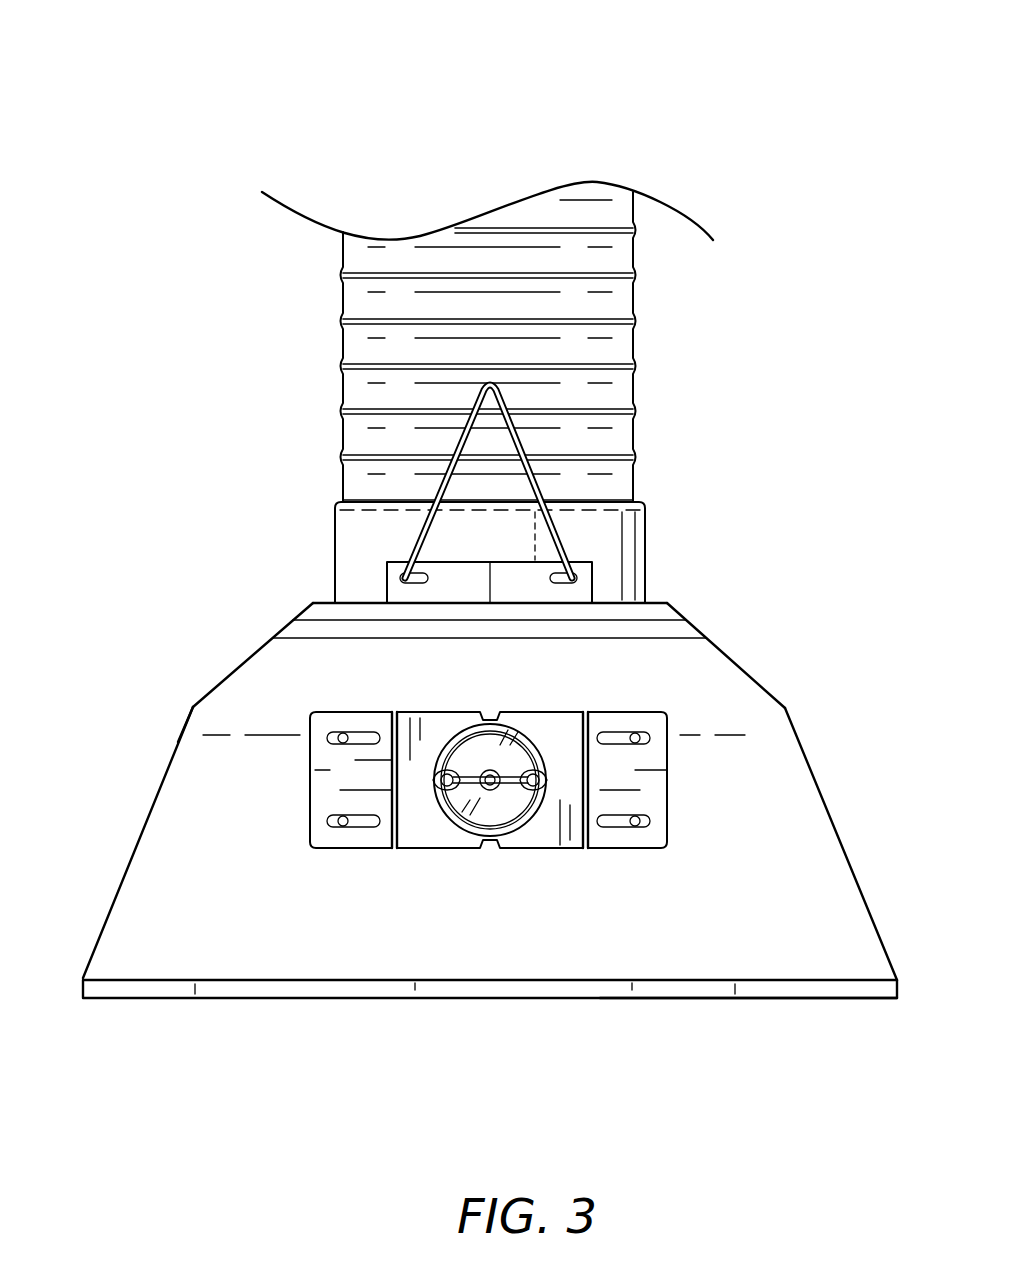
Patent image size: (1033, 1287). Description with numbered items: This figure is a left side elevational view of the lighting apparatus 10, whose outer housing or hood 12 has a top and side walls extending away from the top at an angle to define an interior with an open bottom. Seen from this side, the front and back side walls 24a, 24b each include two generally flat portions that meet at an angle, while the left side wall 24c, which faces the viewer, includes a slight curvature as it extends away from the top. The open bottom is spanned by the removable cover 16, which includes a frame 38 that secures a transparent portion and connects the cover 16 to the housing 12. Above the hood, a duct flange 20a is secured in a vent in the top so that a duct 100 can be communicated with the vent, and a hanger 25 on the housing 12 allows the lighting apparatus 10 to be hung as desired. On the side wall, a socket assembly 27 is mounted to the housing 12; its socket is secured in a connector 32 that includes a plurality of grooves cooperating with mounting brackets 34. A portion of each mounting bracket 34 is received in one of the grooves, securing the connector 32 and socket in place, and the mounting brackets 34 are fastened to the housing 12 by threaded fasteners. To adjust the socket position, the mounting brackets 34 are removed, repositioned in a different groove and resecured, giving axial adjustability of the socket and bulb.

The lighting apparatus 10 is at (226, 130).
The duct 100 is at (618, 390).
The duct flange 20a is at (598, 537).
The hanger 25 is at (423, 527).
The outer housing 12 is at (168, 898).
The socket assembly 27 is at (732, 697).
The front side wall 24a is at (818, 775).
The back side wall 24b is at (178, 741).
The left side wall 24c is at (768, 950).
The cover 16 is at (410, 990).
The frame 38 is at (735, 990).
The mounting bracket 34 is at (653, 800).
The connector 32 is at (508, 827).